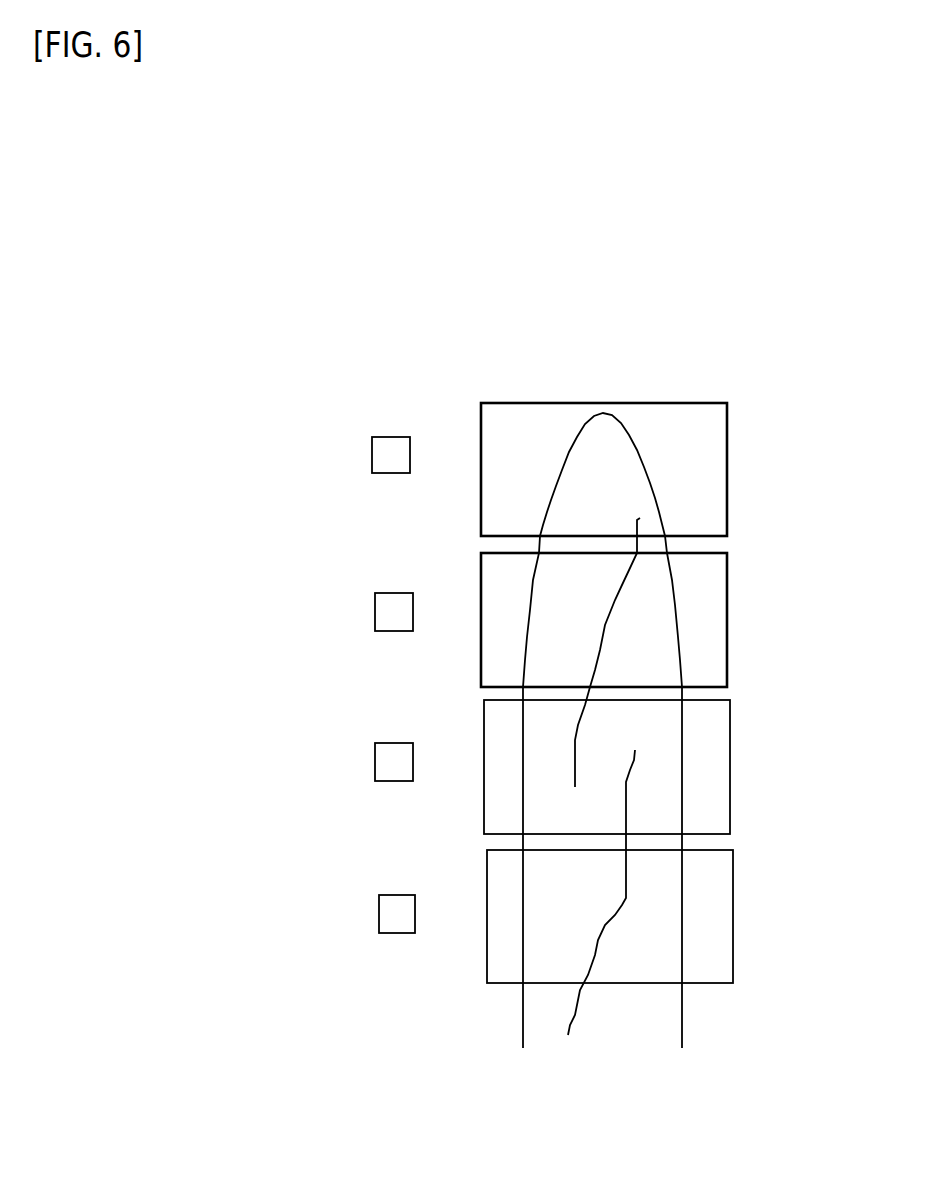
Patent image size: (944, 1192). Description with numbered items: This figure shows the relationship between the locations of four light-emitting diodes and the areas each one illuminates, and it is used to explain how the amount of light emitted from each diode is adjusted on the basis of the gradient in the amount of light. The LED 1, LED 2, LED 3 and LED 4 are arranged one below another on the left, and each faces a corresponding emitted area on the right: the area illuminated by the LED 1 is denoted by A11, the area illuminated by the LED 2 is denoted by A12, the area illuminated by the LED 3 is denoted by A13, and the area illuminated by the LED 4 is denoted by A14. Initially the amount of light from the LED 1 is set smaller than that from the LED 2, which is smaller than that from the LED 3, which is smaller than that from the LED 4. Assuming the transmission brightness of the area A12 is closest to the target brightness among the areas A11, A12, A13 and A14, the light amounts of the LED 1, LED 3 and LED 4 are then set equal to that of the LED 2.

The LED 1 LED1 is at (372, 465).
The LED 2 LED2 is at (375, 617).
The LED 3 LED3 is at (375, 767).
The LED 4 LED4 is at (379, 919).
The area A11 is at (727, 495).
The area A12 is at (727, 635).
The area A13 is at (730, 785).
The area A14 is at (733, 930).